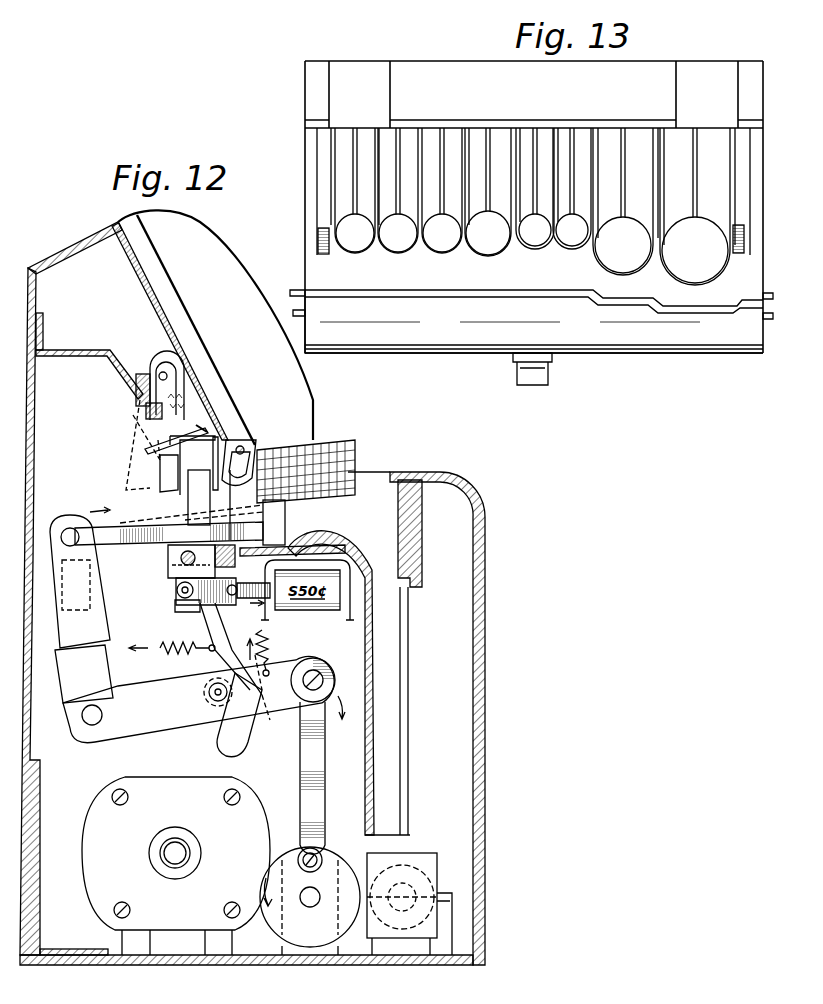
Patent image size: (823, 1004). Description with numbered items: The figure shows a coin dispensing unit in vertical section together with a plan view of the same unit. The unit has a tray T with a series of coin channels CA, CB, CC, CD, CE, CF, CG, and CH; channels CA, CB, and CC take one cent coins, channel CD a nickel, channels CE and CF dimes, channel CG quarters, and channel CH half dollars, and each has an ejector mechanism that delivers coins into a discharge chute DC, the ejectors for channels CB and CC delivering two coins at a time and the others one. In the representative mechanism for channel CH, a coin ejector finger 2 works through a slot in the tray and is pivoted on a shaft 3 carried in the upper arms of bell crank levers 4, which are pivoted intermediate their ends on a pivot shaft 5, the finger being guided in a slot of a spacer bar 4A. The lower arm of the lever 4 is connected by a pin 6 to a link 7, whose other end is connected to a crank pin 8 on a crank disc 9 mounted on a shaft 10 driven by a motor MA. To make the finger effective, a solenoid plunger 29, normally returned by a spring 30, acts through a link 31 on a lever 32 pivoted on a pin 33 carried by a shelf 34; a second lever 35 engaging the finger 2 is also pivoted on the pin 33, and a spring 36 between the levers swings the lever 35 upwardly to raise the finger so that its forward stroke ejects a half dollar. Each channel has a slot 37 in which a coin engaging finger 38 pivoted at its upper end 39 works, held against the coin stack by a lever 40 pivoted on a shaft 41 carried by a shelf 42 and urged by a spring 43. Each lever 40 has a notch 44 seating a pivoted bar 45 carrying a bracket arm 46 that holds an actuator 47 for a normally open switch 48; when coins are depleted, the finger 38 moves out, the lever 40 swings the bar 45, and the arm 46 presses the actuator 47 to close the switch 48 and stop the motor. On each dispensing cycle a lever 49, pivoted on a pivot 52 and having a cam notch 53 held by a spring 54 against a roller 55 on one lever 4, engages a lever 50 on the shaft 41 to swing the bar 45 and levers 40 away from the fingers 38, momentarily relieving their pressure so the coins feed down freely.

In FIG. 13, the tray T is at (345, 162).
In FIG. 12, the tray T is at (248, 275).
In FIG. 13, the coin channel CA is at (351, 195).
In FIG. 13, the coin channel CB is at (394, 195).
In FIG. 13, the coin channel CC is at (438, 195).
In FIG. 13, the coin channel CD is at (485, 195).
In FIG. 13, the coin channel CE is at (533, 195).
In FIG. 13, the coin channel CF is at (571, 195).
In FIG. 13, the coin channel CG is at (615, 195).
In FIG. 13, the coin channel CH is at (684, 195).
In FIG. 12, the coin channel CH is at (213, 276).
In FIG. 13, the discharge chute DC is at (568, 280).
In FIG. 12, the discharge chute DC is at (395, 666).
In FIG. 12, the coin ejector finger 2 is at (145, 541).
In FIG. 12, the shaft 3 is at (70, 528).
In FIG. 12, the bell crank lever 4 is at (145, 722).
In FIG. 12, the spacer bar 4A is at (96, 570).
In FIG. 12, the pivot shaft 5 is at (87, 718).
In FIG. 12, the pin 6 is at (333, 675).
In FIG. 12, the link 7 is at (300, 783).
In FIG. 12, the crank pin 8 is at (300, 850).
In FIG. 12, the crank disc 9 is at (346, 868).
In FIG. 12, the shaft 10 is at (310, 903).
In FIG. 12, the plunger 29 is at (262, 604).
In FIG. 12, the spring 30 is at (258, 586).
In FIG. 12, the link 31 is at (206, 612).
In FIG. 12, the lever 32 is at (176, 588).
In FIG. 12, the pin 33 is at (180, 560).
In FIG. 12, the shelf 34 is at (276, 547).
In FIG. 12, the second lever 35 is at (266, 528).
In FIG. 12, the spring 36 is at (225, 554).
In FIG. 12, the slot 37 is at (246, 441).
In FIG. 12, the coin engaging finger 38 is at (263, 455).
In FIG. 12, the upper end 39 is at (249, 450).
In FIG. 12, the lever 40 is at (212, 460).
In FIG. 12, the shaft 41 is at (158, 370).
In FIG. 12, the shelf 42 is at (100, 348).
In FIG. 12, the spring 43 is at (146, 411).
In FIG. 12, the notch 44 is at (150, 432).
In FIG. 12, the bar 45 is at (198, 430).
In FIG. 12, the bracket arm 46 is at (148, 447).
In FIG. 12, the actuator 47 is at (150, 462).
In FIG. 12, the switch 48 is at (136, 383).
In FIG. 12, the lever 49 is at (192, 510).
In FIG. 12, the lever 50 is at (166, 480).
In FIG. 12, the pivot 52 is at (192, 605).
In FIG. 12, the cam notch 53 is at (258, 718).
In FIG. 12, the spring 54 is at (180, 655).
In FIG. 12, the roller 55 is at (205, 698).
In FIG. 12, the motor MA is at (140, 836).